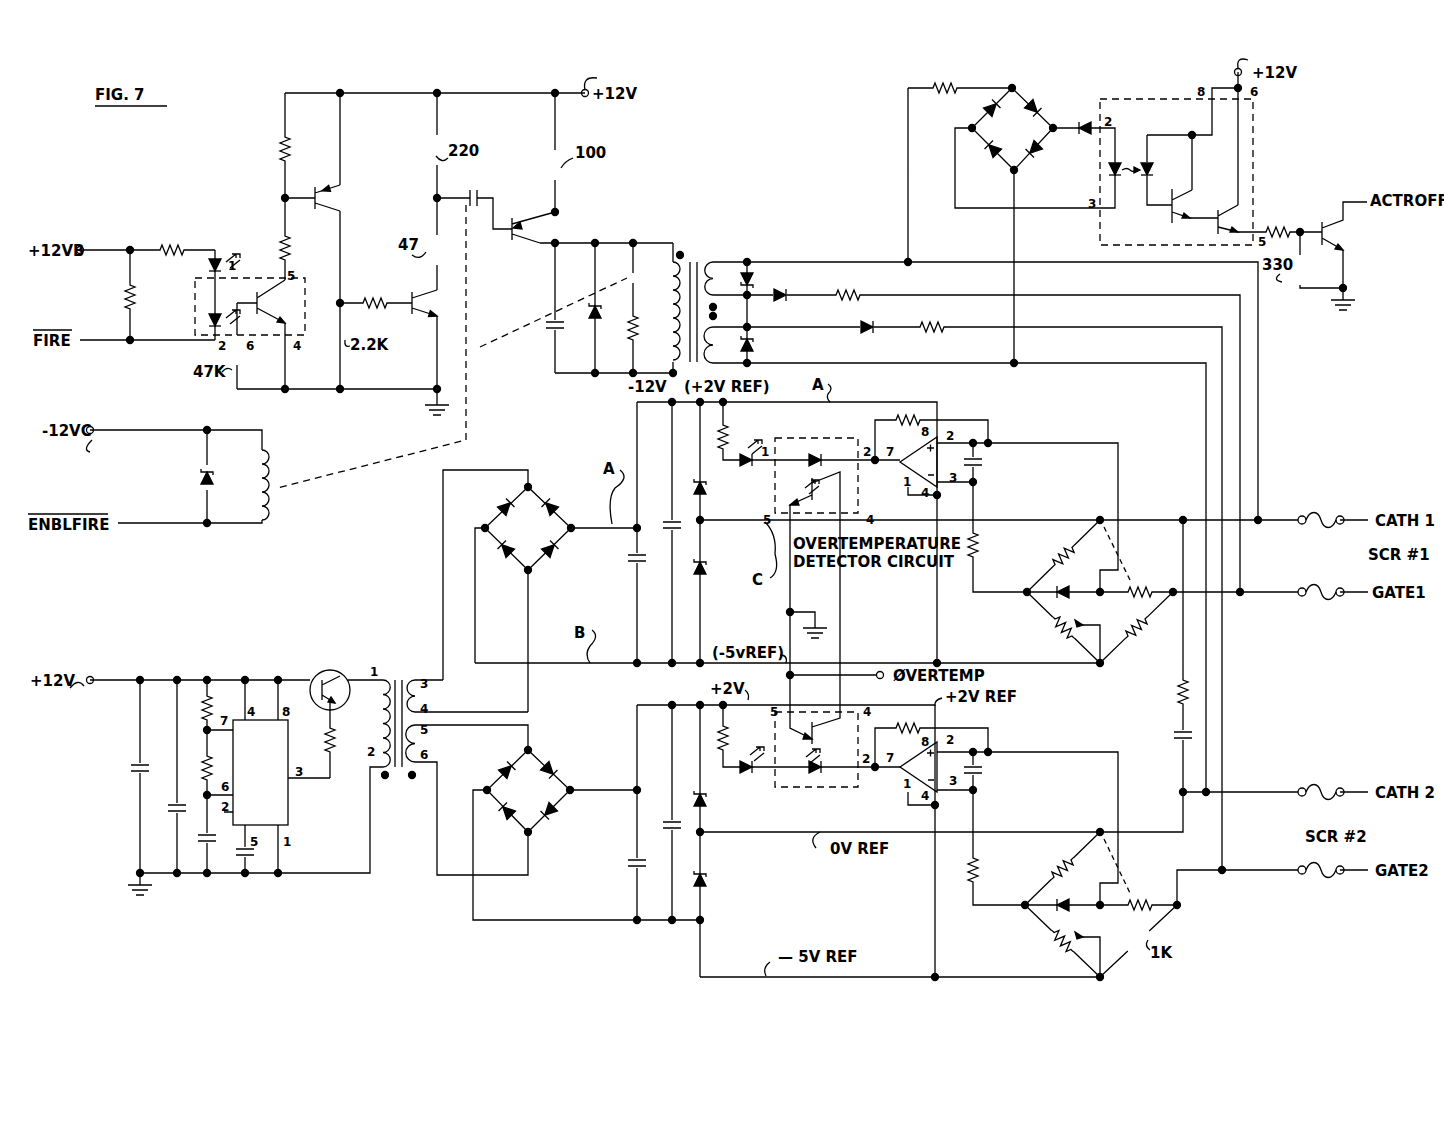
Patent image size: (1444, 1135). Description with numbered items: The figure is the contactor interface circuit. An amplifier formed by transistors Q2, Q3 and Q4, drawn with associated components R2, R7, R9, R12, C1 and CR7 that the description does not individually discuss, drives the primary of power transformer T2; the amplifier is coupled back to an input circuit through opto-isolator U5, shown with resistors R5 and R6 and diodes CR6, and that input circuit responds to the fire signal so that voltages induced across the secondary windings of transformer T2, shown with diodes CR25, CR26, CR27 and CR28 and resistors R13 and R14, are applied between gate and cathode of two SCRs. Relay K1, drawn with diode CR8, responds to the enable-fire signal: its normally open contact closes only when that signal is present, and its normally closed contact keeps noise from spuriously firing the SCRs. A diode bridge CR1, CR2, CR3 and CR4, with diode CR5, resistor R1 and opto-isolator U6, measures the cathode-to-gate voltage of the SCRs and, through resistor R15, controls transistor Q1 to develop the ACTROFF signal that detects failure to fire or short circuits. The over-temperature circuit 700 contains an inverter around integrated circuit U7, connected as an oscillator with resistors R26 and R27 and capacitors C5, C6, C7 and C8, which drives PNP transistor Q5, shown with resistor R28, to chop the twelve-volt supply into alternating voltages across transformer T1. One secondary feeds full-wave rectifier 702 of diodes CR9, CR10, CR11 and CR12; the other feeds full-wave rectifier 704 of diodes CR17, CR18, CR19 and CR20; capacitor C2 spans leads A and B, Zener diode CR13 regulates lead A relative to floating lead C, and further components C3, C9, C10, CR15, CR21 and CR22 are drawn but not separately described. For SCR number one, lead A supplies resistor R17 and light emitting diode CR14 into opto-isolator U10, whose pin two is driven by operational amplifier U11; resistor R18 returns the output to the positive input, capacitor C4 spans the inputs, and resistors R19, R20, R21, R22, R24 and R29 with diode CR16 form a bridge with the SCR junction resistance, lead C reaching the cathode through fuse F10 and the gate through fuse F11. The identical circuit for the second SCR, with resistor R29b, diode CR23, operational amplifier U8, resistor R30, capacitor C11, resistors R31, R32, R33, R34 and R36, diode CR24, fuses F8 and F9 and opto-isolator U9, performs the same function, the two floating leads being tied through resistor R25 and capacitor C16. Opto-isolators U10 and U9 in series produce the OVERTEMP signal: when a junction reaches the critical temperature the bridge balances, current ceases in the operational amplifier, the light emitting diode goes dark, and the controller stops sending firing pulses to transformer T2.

The resistor R1 is at (938, 82).
The resistor R2 is at (278, 150).
The resistor R5 is at (193, 228).
The resistor R6 is at (126, 300).
The resistor R7 is at (290, 250).
The resistor R9 is at (385, 280).
The resistor R12 is at (630, 336).
The resistor R13 is at (856, 292).
The resistor R14 is at (940, 338).
The resistor R15 is at (1300, 212).
The resistor R17 is at (731, 430).
The resistor R18 is at (921, 390).
The resistor R19 is at (980, 550).
The resistor R20 is at (1065, 540).
The resistor R21 is at (1040, 608).
The variable resistor R22 is at (1076, 636).
The resistor R24 is at (1158, 584).
The resistor R25 is at (1176, 690).
The resistor R26 is at (200, 710).
The resistor R27 is at (200, 775).
The resistor R28 is at (335, 745).
The resistor R29 is at (1136, 635).
The resistor R29b is at (729, 742).
The feedback resistor R30 is at (926, 726).
The resistor R31 is at (980, 874).
The bridge resistor R32 is at (1062, 856).
The potentiometer R33 is at (1042, 922).
The potentiometer wiper R34 is at (1054, 944).
The resistor R36 is at (1120, 906).
The diode CR1 is at (989, 114).
The diode CR2 is at (1036, 104).
The diode CR3 is at (1001, 160).
The diode CR4 is at (1037, 162).
The Zener diode CR5 is at (1081, 124).
The optocoupler LED pair CR6 is at (208, 266).
The zener diode CR7 is at (590, 322).
The zener diode CR8 is at (202, 474).
The diode CR9 is at (500, 506).
The diode CR10 is at (552, 504).
The diode CR11 is at (508, 566).
The diode CR12 is at (548, 560).
The Zener diode CR13 is at (708, 496).
The light emitting diode CR14 is at (752, 466).
The zener diode CR15 is at (710, 562).
The diode CR16 is at (1067, 598).
The diode CR17 is at (509, 766).
The diode CR18 is at (496, 818).
The diode CR19 is at (549, 822).
The diode CR20 is at (552, 764).
The zener diode CR21 is at (710, 800).
The zener diode CR22 is at (708, 874).
The LED CR23 is at (749, 770).
The diode CR24 is at (1067, 911).
The diode CR25 is at (782, 292).
The diode CR26 is at (848, 337).
The zener diode CR27 is at (754, 274).
The zener diode CR28 is at (762, 340).
The capacitor C1 is at (546, 330).
The capacitor C2 is at (668, 517).
The capacitor C3 is at (623, 558).
The capacitor C4 is at (982, 468).
The capacitor C5 is at (131, 768).
The capacitor C6 is at (166, 808).
The capacitor C7 is at (202, 836).
The capacitor C8 is at (240, 850).
The capacitor C9 is at (629, 862).
The capacitor C10 is at (660, 828).
The capacitor C11 is at (982, 774).
The capacitor C16 is at (1174, 736).
The transistor Q1 is at (1344, 230).
The transistor Q2 is at (335, 196).
The transistor Q3 is at (533, 241).
The transistor Q4 is at (428, 298).
The PNP transistor Q5 is at (327, 674).
The opto-isolator U5 is at (305, 310).
The opto-isolator U6 is at (1171, 102).
The integrated circuit U7 is at (290, 798).
The comparator U8 is at (898, 792).
The opto-isolator U9 is at (812, 787).
The opto-isolator U10 is at (824, 438).
The operational amplifier U11 is at (896, 472).
The transformer T1 is at (405, 674).
The power transformer T2 is at (697, 260).
The relay K1 is at (270, 506).
The fuse F8 is at (1321, 798).
The fuse F9 is at (1321, 876).
The fuse F10 is at (1318, 528).
The fuse F11 is at (1321, 598).
The over-temperature circuit 700 is at (896, 592).
The full-wave rectifier 702 is at (542, 541).
The full-wave rectifier 704 is at (543, 803).